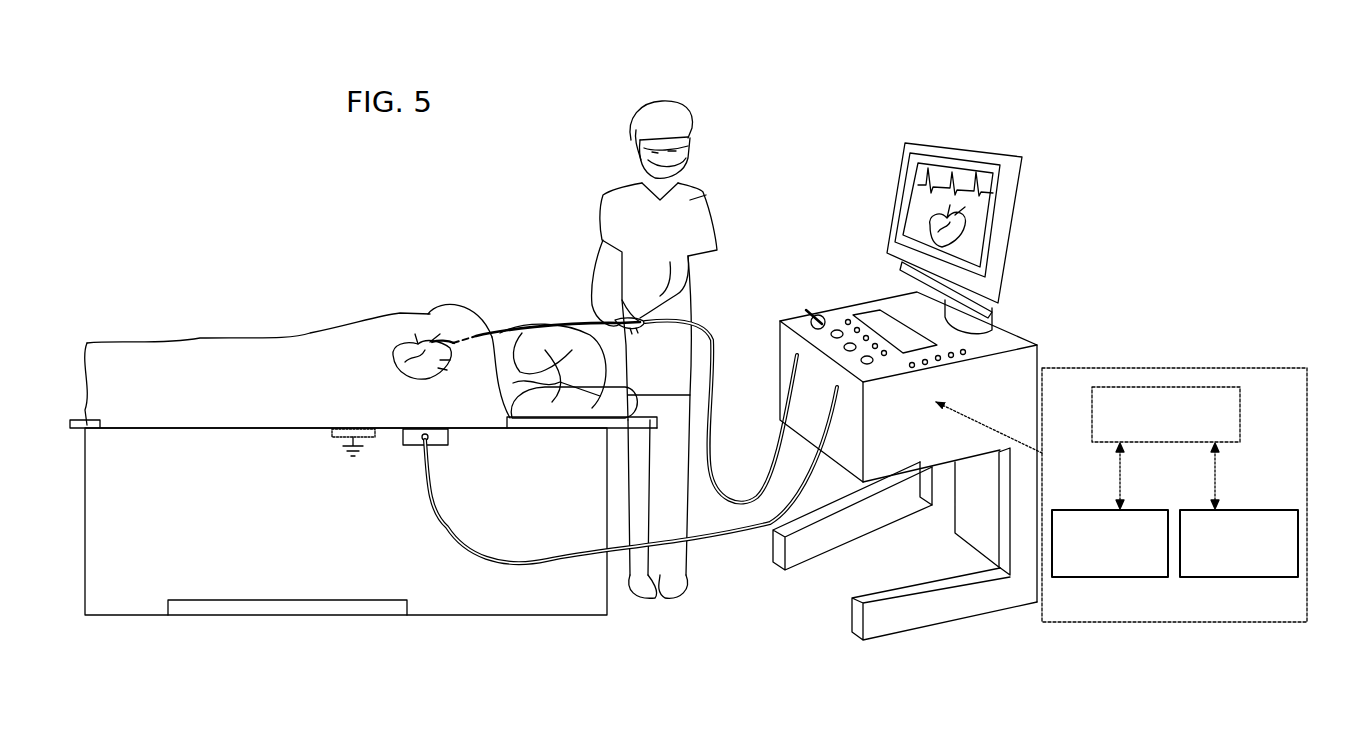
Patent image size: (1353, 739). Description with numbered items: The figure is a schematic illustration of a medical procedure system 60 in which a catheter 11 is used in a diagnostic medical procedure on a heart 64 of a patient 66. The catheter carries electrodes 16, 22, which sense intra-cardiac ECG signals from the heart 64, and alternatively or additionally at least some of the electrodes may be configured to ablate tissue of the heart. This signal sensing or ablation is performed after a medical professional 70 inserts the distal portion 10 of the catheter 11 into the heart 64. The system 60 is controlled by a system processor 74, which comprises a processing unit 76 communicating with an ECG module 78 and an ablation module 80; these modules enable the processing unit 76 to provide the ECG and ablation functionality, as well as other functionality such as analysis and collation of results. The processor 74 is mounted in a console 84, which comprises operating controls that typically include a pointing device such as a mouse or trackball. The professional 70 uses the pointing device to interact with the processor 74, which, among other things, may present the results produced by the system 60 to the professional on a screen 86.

The distal portion 10 is at (432, 336).
The catheter 11 is at (713, 343).
The electrode 16 is at (482, 262).
The electrode 22 is at (546, 332).
The medical procedure system 60 is at (934, 94).
The heart 64 is at (413, 337).
The patient 66 is at (583, 398).
The medical professional 70 is at (630, 223).
The system processor 74 is at (1126, 499).
The processing unit 76 is at (1108, 387).
The ECG module 78 is at (1297, 577).
The ablation module 80 is at (1052, 567).
The console 84 is at (853, 303).
The screen 86 is at (1013, 237).